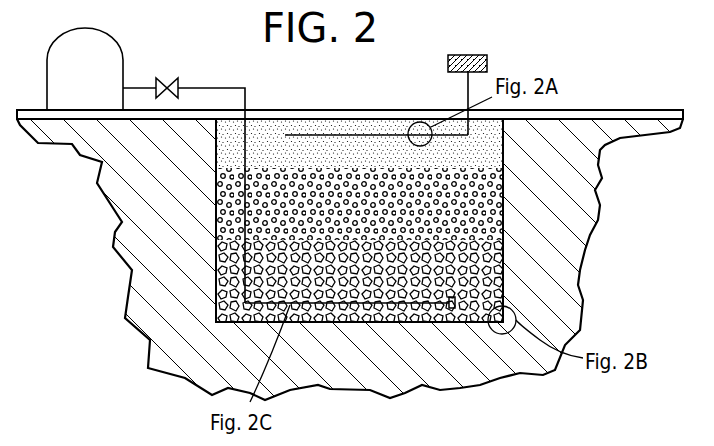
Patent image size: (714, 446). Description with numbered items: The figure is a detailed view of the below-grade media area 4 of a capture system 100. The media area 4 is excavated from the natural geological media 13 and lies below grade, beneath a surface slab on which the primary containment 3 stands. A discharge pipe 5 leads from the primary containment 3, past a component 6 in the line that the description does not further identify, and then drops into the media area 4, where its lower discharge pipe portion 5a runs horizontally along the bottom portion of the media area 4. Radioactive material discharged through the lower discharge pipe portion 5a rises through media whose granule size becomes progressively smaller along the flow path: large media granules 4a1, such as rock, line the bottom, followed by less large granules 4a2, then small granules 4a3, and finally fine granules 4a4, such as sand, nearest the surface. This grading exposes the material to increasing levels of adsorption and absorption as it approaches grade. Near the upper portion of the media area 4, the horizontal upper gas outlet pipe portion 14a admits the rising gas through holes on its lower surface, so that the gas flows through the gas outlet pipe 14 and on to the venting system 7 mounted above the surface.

The primary containment 3 is at (85, 76).
The valve 6 is at (167, 78).
The discharge pipe 5 is at (222, 88).
The lower discharge pipe portion 5a is at (352, 305).
The gas outlet pipe 14 is at (468, 100).
The upper gas outlet pipe portion 14a is at (330, 133).
The venting system 7 is at (487, 63).
The media area 4 is at (215, 207).
The fine granules 4a4 is at (494, 143).
The small granules 4a3 is at (503, 180).
The less large granules 4a2 is at (503, 245).
The large media granules 4a1 is at (503, 283).
The natural geological media 13 is at (582, 250).
The capture system 100 is at (162, 270).